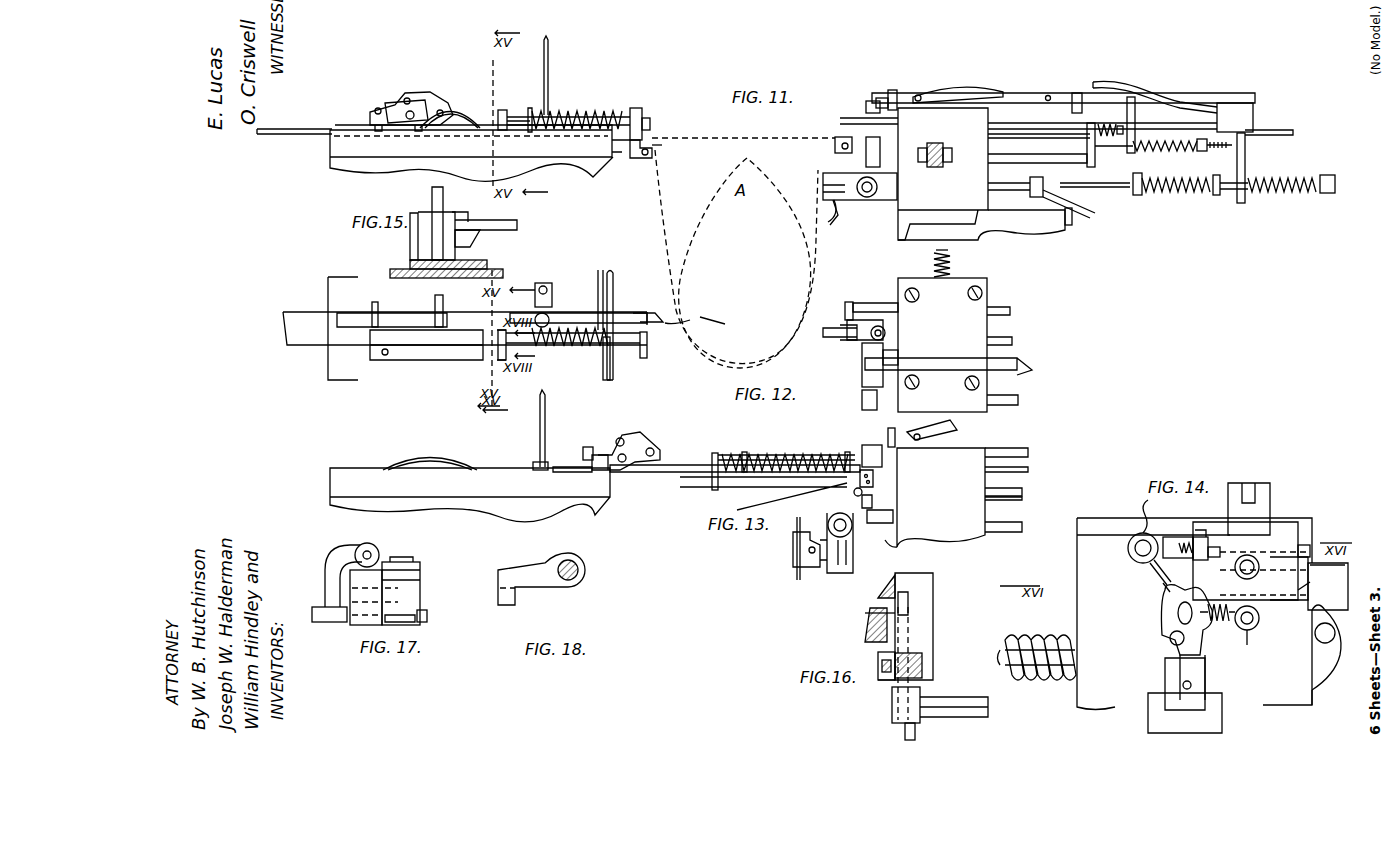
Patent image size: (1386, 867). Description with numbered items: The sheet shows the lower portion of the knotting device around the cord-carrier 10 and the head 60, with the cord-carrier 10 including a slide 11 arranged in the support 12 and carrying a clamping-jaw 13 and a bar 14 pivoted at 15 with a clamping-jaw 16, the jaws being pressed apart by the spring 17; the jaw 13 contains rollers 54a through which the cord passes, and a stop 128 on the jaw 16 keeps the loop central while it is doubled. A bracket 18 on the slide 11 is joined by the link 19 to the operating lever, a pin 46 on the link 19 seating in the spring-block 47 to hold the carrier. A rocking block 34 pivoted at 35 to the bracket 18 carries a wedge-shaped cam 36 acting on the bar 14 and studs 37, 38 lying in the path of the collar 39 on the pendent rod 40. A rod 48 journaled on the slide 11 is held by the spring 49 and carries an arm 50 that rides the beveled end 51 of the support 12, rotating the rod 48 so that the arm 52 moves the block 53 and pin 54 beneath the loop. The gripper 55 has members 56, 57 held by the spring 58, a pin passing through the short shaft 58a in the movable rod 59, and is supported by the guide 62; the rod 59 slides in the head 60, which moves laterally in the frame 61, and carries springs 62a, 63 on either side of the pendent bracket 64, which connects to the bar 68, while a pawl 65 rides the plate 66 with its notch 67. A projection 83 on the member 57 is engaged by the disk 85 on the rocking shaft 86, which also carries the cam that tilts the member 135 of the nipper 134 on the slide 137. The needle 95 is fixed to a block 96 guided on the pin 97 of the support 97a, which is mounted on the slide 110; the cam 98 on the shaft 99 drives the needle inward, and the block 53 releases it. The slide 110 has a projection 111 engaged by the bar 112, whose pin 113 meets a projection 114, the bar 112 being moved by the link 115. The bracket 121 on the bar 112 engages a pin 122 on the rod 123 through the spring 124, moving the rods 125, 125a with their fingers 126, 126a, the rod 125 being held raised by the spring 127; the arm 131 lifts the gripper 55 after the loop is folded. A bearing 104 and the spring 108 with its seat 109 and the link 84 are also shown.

In FIG. 11, the cord-carrier 10 is at (658, 117).
In FIG. 13, the cord-carrier 10 is at (786, 454).
In FIG. 11, the slide 11 is at (310, 128).
In FIG. 12, the slide 11 is at (465, 328).
In FIG. 11, the support 12 is at (345, 165).
In FIG. 11, the clamping-jaw 13 is at (642, 158).
In FIG. 13, the clamping-jaw 13 is at (860, 492).
In FIG. 16, the clamping-jaw 13 is at (866, 628).
In FIG. 17, the clamping-jaw 13 is at (360, 622).
In FIG. 12, the bar or rod 14 is at (568, 318).
In FIG. 13, the bar or rod 14 is at (690, 473).
In FIG. 17, the bar or rod 14 is at (415, 570).
In FIG. 12, the pivot 15 is at (535, 318).
In FIG. 17, the pivot 15 is at (405, 558).
In FIG. 16, the clamping-jaw 16 is at (890, 595).
In FIG. 17, the clamping-jaw 16 is at (420, 578).
In FIG. 12, the spring 17 is at (602, 294).
In FIG. 15, the bracket 18 is at (425, 247).
In FIG. 12, the bracket 18 is at (402, 345).
In FIG. 13, the bracket 18 is at (625, 455).
In FIG. 11, the rod or link 19 is at (388, 104).
In FIG. 13, the rod or link 19 is at (590, 472).
In FIG. 11, the rocking block or arm 34 is at (398, 102).
In FIG. 15, the rocking block or arm 34 is at (432, 196).
In FIG. 11, the pivot 35 is at (412, 108).
In FIG. 15, the wedge-shaped cam 36 is at (482, 237).
In FIG. 13, the wedge-shaped cam 36 is at (572, 457).
In FIG. 12, the rod or stud 37 is at (378, 306).
In FIG. 13, the rod or stud 37 is at (587, 447).
In FIG. 15, the rod or stud 38 is at (519, 223).
In FIG. 12, the rod or stud 38 is at (443, 300).
In FIG. 13, the rod or stud 38 is at (662, 452).
In FIG. 12, the collar or bracket 39 is at (545, 283).
In FIG. 13, the collar or bracket 39 is at (535, 463).
In FIG. 11, the pendent rod 40 is at (548, 77).
In FIG. 13, the pendent rod 40 is at (540, 432).
In FIG. 12, the pin 46 is at (648, 303).
In FIG. 11, the spring-block 47 is at (452, 112).
In FIG. 13, the spring-block 47 is at (425, 465).
In FIG. 11, the rod 48 is at (512, 118).
In FIG. 12, the rod 48 is at (569, 353).
In FIG. 17, the rod 48 is at (372, 550).
In FIG. 18, the rod 48 is at (579, 575).
In FIG. 11, the spring 49 is at (590, 110).
In FIG. 12, the spring 49 is at (578, 350).
In FIG. 11, the arm 50 is at (503, 110).
In FIG. 12, the arm 50 is at (497, 345).
In FIG. 13, the arm 50 is at (716, 490).
In FIG. 18, the arm 50 is at (515, 570).
In FIG. 11, the beveled end 51 is at (612, 158).
In FIG. 12, the beveled end 51 is at (617, 360).
In FIG. 13, the beveled end 51 is at (628, 490).
In FIG. 11, the arm 52 is at (640, 112).
In FIG. 16, the arm 52 is at (880, 662).
In FIG. 17, the arm 52 is at (325, 578).
In FIG. 16, the block 53 is at (880, 683).
In FIG. 17, the block 53 is at (315, 618).
In FIG. 16, the pin 54 is at (866, 615).
In FIG. 17, the pin 54 is at (397, 624).
In FIG. 17, the rollers 54a is at (390, 600).
In FIG. 11, the gripper 55 is at (823, 178).
In FIG. 13, the gripper 55 is at (835, 573).
In FIG. 14, the gripper 55 is at (1153, 650).
In FIG. 11, the gripper member 56 is at (835, 147).
In FIG. 13, the gripper member 56 is at (795, 560).
In FIG. 14, the gripper member 56 is at (1200, 653).
In FIG. 14, the yielding gripper member 57 is at (1170, 625).
In FIG. 11, the spring 58 is at (823, 190).
In FIG. 13, the spring 58 is at (853, 550).
In FIG. 14, the spring 58 is at (1240, 630).
In FIG. 11, the short shaft 58a is at (838, 216).
In FIG. 13, the short shaft 58a is at (853, 492).
In FIG. 11, the movable rod 59 is at (1095, 197).
In FIG. 13, the movable rod 59 is at (880, 513).
In FIG. 11, the head 60 is at (943, 174).
In FIG. 12, the head 60 is at (942, 345).
In FIG. 13, the head 60 is at (941, 497).
In FIG. 14, the head 60 is at (1300, 705).
In FIG. 11, the frame 61 is at (1045, 228).
In FIG. 11, the guide 62 is at (870, 200).
In FIG. 13, the guide 62 is at (897, 548).
In FIG. 14, the guide 62 is at (1222, 718).
In FIG. 11, the spring 62a is at (1192, 195).
In FIG. 11, the spring 63 is at (1265, 200).
In FIG. 11, the pendent bracket 64 is at (1245, 152).
In FIG. 11, the pawl or detent 65 is at (1085, 198).
In FIG. 11, the plate 66 is at (1073, 218).
In FIG. 11, the notch 67 is at (1030, 192).
In FIG. 11, the arm or bar 68 is at (1133, 85).
In FIG. 14, the projection 83 is at (1165, 590).
In FIG. 14, the link 84 is at (1150, 568).
In FIG. 12, the disk 85 is at (858, 303).
In FIG. 14, the disk 85 is at (1135, 553).
In FIG. 12, the rocking shaft 86 is at (1012, 311).
In FIG. 14, the rocking shaft 86 is at (1143, 535).
In FIG. 14, the needle 95 is at (1305, 600).
In FIG. 16, the needle 95 is at (910, 607).
In FIG. 11, the block 96 is at (880, 142).
In FIG. 12, the block 96 is at (862, 400).
In FIG. 14, the block 96 is at (1327, 582).
In FIG. 16, the block 96 is at (920, 697).
In FIG. 11, the rod or pin 97 is at (866, 108).
In FIG. 14, the rod or pin 97 is at (1310, 550).
In FIG. 16, the rod or pin 97 is at (916, 732).
In FIG. 12, the support 97a is at (862, 380).
In FIG. 13, the support 97a is at (866, 450).
In FIG. 16, the support 97a is at (925, 644).
In FIG. 14, the cam 98 is at (1322, 645).
In FIG. 11, the shaft 99 is at (1037, 167).
In FIG. 13, the shaft 99 is at (1024, 500).
In FIG. 14, the shaft 99 is at (1330, 645).
In FIG. 16, the shaft 99 is at (975, 717).
In FIG. 11, the bearing 104 is at (933, 170).
In FIG. 12, the spring 108 is at (934, 268).
In FIG. 14, the spring 108 is at (1040, 649).
In FIG. 12, the spring seat 109 is at (952, 264).
In FIG. 14, the spring seat 109 is at (1005, 652).
In FIG. 11, the slide 110 is at (1020, 95).
In FIG. 12, the slide 110 is at (1034, 368).
In FIG. 11, the projection 111 is at (893, 90).
In FIG. 14, the projection 111 is at (1246, 496).
In FIG. 11, the bar 112 is at (904, 93).
In FIG. 13, the bar 112 is at (868, 445).
In FIG. 14, the bar 112 is at (1256, 500).
In FIG. 11, the pin 113 is at (1062, 80).
In FIG. 11, the projection 114 is at (1078, 92).
In FIG. 11, the link 115 is at (952, 90).
In FIG. 13, the link 115 is at (957, 426).
In FIG. 11, the bracket 121 is at (1135, 108).
In FIG. 11, the pin 122 is at (1146, 154).
In FIG. 11, the rod 123 is at (1107, 145).
In FIG. 11, the spring 124 is at (1211, 155).
In FIG. 11, the rod 125 is at (1003, 133).
In FIG. 13, the rod 125 is at (1030, 452).
In FIG. 14, the rod 125 is at (1295, 555).
In FIG. 11, the rod 125a is at (1043, 183).
In FIG. 13, the rod 125a is at (1024, 490).
In FIG. 14, the rod 125a is at (1236, 615).
In FIG. 14, the finger 126 is at (1262, 555).
In FIG. 14, the finger 126a is at (1250, 645).
In FIG. 11, the spring 127 is at (1108, 120).
In FIG. 11, the stop or bracket 128 is at (656, 150).
In FIG. 12, the stop or bracket 128 is at (668, 323).
In FIG. 17, the vertically-moving arm 131 is at (427, 617).
In FIG. 11, the nipper 134 is at (840, 121).
In FIG. 12, the nipper 134 is at (848, 338).
In FIG. 14, the nipper 134 is at (1202, 537).
In FIG. 12, the nipper member 135 is at (848, 325).
In FIG. 14, the nipper member 135 is at (1170, 537).
In FIG. 12, the slide 137 is at (1014, 341).